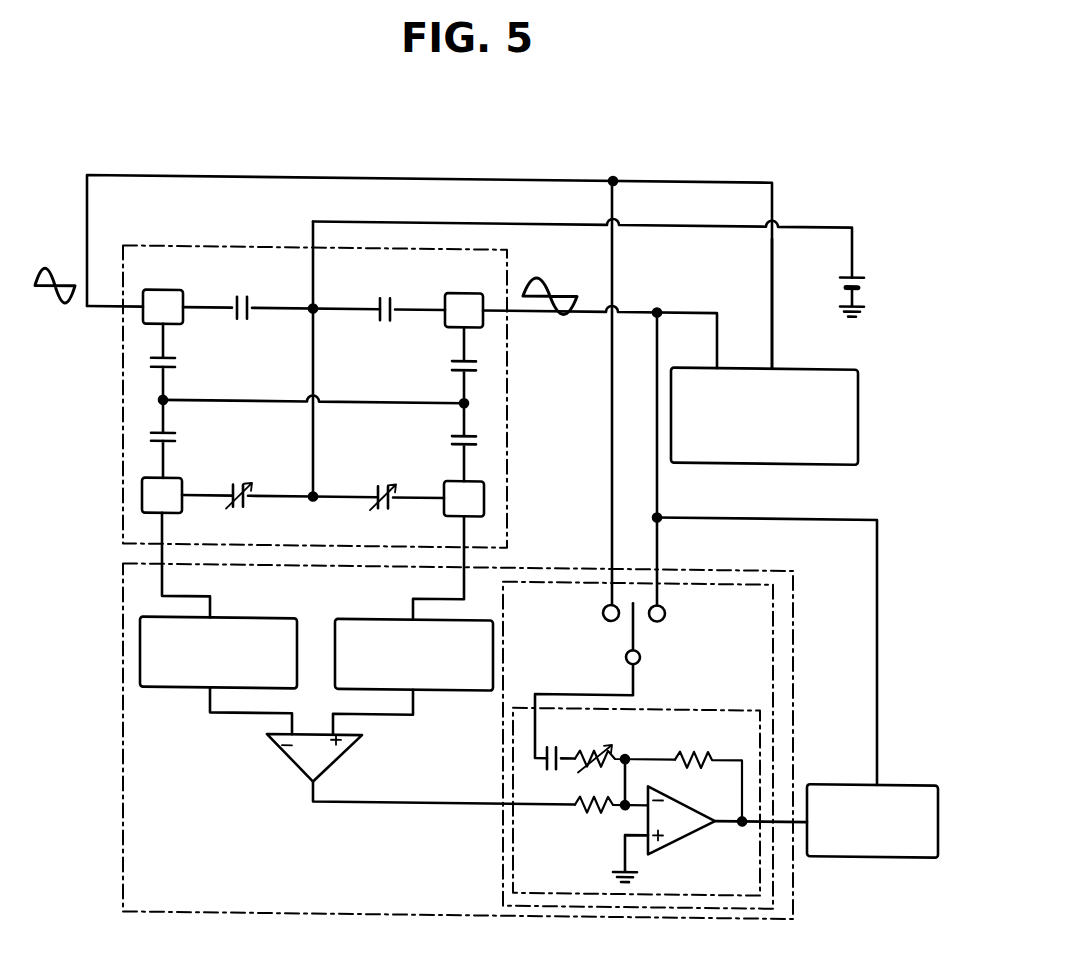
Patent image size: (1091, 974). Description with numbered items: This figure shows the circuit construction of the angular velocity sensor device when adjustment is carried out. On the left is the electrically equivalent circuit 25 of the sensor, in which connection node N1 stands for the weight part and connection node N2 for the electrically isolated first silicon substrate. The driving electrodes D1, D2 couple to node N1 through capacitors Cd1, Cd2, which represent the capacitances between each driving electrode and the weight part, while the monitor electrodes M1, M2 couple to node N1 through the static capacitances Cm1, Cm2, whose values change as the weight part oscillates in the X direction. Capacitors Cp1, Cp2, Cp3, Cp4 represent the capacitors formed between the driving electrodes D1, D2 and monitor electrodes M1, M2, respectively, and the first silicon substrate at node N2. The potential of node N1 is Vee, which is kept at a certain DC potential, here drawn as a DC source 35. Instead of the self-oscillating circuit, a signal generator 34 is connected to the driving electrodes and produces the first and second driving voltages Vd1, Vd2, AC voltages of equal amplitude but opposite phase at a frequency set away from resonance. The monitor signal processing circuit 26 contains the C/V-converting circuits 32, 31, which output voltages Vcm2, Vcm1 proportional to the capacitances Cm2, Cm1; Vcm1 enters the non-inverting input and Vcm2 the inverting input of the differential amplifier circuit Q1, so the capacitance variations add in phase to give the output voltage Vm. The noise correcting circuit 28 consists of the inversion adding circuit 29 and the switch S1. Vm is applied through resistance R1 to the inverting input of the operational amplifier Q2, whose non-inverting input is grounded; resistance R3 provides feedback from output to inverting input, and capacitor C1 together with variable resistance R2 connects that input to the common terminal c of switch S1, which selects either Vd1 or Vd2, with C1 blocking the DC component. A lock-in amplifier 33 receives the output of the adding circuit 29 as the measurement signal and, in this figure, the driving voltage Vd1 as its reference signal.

The electrically equivalent circuit 25 is at (152, 244).
The connection node N1 is at (313, 300).
The connection node N2 is at (163, 398).
The driving electrode D1 is at (461, 291).
The driving electrode D2 is at (163, 290).
The capacitor Cd1 is at (375, 291).
The capacitor Cd2 is at (234, 290).
The capacitor Cp1 is at (434, 364).
The capacitor Cp2 is at (188, 362).
The capacitor Cp3 is at (434, 441).
The capacitor Cp4 is at (188, 439).
The static capacitance Cm1 is at (378, 481).
The static capacitance Cm2 is at (247, 480).
The monitor electrode M1 is at (448, 510).
The monitor electrode M2 is at (173, 509).
The potential of connection node N1 Vee is at (582, 235).
The first driving voltage Vd1 is at (690, 441).
The second driving voltage Vd2 is at (797, 304).
The power supply 35 is at (855, 278).
The signal generator 34 is at (818, 360).
The C/V-converting circuit 32 is at (180, 686).
The C/V-converting circuit 31 is at (433, 686).
The output voltage Vcm2 is at (240, 720).
The output voltage Vcm1 is at (382, 721).
The differential amplifier circuit Q1 is at (314, 758).
The output voltage Vm is at (441, 810).
The switch S1 is at (643, 637).
The common terminal c is at (626, 665).
The capacitor C1 is at (555, 747).
The resistance R1 is at (611, 823).
The variable resistance R2 is at (625, 747).
The resistance R3 is at (707, 771).
The operational amplifier Q2 is at (710, 835).
The monitor signal processing circuit 26 is at (793, 623).
The noise correcting circuit 28 is at (774, 722).
The inversion adding circuit 29 is at (761, 801).
The lock-in amplifier 33 is at (868, 847).